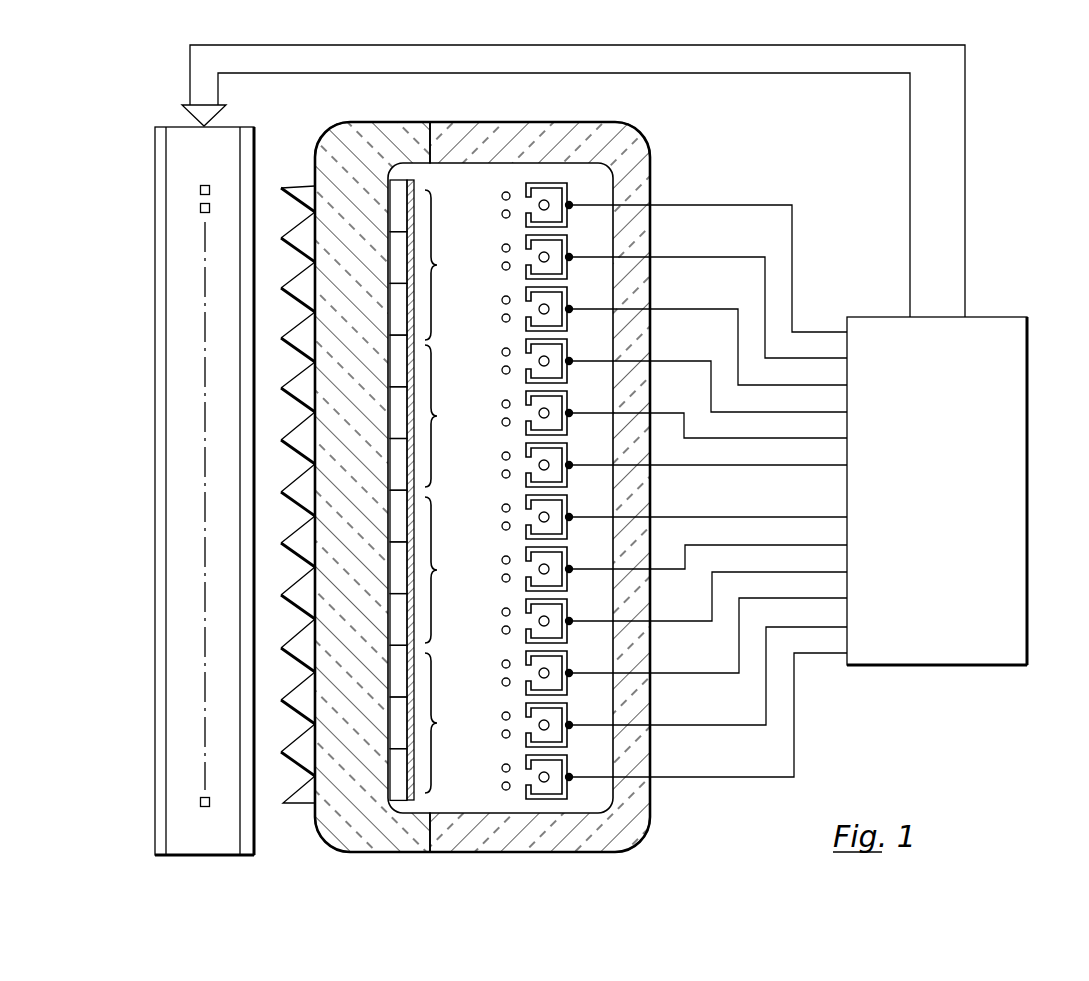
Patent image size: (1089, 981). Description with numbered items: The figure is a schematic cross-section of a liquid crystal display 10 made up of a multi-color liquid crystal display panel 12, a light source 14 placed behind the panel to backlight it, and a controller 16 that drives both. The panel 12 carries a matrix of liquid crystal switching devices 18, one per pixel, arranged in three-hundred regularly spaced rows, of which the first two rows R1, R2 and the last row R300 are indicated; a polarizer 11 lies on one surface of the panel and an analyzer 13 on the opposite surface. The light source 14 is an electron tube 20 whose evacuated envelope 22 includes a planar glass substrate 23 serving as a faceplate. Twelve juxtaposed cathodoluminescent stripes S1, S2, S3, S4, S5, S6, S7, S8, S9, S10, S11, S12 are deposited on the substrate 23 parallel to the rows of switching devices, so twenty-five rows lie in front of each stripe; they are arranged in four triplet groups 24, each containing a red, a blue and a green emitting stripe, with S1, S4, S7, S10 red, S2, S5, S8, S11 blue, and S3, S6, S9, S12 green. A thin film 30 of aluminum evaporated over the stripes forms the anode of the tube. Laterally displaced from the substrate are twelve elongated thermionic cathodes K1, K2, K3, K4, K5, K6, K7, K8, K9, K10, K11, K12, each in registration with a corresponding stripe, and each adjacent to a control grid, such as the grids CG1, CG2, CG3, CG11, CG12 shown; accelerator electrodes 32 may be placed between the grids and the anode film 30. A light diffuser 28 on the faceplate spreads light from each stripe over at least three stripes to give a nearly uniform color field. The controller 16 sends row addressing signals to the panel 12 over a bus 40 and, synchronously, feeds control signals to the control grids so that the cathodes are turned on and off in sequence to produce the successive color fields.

The liquid crystal display 10 is at (138, 248).
The polarizer 11 is at (254, 130).
The multi-color liquid crystal display panel 12 is at (177, 127).
The analyzer 13 is at (155, 163).
The light source 14 is at (498, 116).
The controller 16 is at (1027, 363).
The liquid crystal switching devices 18 is at (202, 486).
The electron tube 20 is at (562, 124).
The evacuated envelope 22 is at (404, 118).
The glass substrate 23 is at (337, 137).
The groups of cathodoluminescent stripes 24 is at (447, 491).
The light diffuser 28 is at (305, 186).
The thin film 30 is at (396, 483).
The accelerator electrodes 32 is at (502, 215).
The bus 40 is at (297, 46).
The cathodoluminescent stripe S1 is at (390, 209).
The cathodoluminescent stripe S2 is at (390, 261).
The cathodoluminescent stripe S3 is at (390, 312).
The cathodoluminescent stripe S4 is at (390, 364).
The cathodoluminescent stripe S5 is at (390, 416).
The cathodoluminescent stripe S6 is at (390, 467).
The cathodoluminescent stripe S7 is at (390, 519).
The cathodoluminescent stripe S8 is at (390, 571).
The cathodoluminescent stripe S9 is at (390, 622).
The cathodoluminescent stripe S10 is at (390, 674).
The cathodoluminescent stripe S11 is at (390, 726).
The cathodoluminescent stripe S12 is at (390, 778).
The thermionic cathode K1 is at (549, 203).
The thermionic cathode K2 is at (549, 255).
The thermionic cathode K3 is at (549, 307).
The thermionic cathode K4 is at (686, 375).
The thermionic cathode K5 is at (686, 414).
The thermionic cathode K6 is at (686, 465).
The thermionic cathode K7 is at (686, 517).
The thermionic cathode K8 is at (686, 568).
The thermionic cathode K9 is at (686, 607).
The thermionic cathode K10 is at (686, 646).
The thermionic cathode K11 is at (548, 729).
The thermionic cathode K12 is at (548, 781).
The control grid CG1 is at (525, 185).
The control grid CG2 is at (526, 238).
The control grid CG3 is at (526, 290).
The control grid CG11 is at (527, 756).
The control grid CG12 is at (527, 797).
The row of switching devices R1 is at (200, 190).
The row of switching devices R2 is at (200, 209).
The row of switching devices R300 is at (200, 802).